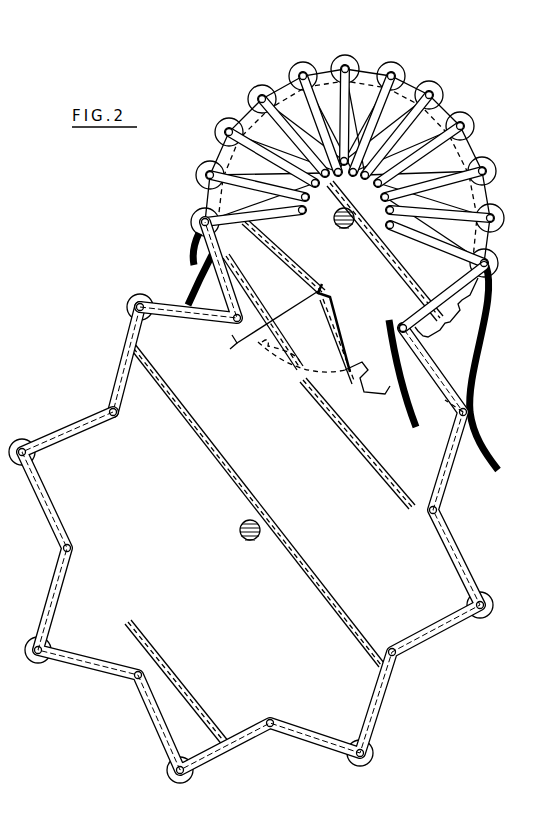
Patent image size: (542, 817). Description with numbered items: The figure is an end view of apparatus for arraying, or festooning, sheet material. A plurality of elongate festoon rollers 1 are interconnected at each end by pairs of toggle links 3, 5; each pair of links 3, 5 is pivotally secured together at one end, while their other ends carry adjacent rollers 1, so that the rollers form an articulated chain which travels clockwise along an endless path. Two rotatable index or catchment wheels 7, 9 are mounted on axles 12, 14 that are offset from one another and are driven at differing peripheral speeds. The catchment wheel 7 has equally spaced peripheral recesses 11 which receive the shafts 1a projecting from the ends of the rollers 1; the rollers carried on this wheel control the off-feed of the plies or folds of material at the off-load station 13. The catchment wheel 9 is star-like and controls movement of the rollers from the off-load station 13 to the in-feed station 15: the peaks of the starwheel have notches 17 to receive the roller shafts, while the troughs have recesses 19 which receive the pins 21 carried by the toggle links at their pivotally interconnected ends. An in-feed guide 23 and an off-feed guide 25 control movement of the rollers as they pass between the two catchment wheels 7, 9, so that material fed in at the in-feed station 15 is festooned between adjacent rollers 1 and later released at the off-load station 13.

The festoon roller 1 is at (345, 58).
The shaft 1a is at (30, 452).
The toggle link 3 is at (213, 160).
The toggle link 5 is at (287, 78).
The catchment wheel 7 is at (350, 270).
The catchment wheel 9 is at (361, 528).
The peripheral recess 11 is at (350, 378).
The axle 12 is at (337, 224).
The off-load station 13 is at (495, 306).
The axle 14 is at (250, 542).
The in-feed station 15 is at (162, 279).
The notch 17 is at (325, 293).
The recess 19 is at (236, 344).
The pin 21 is at (437, 333).
The in-feed guide 23 is at (196, 242).
The off-feed guide 25 is at (404, 394).